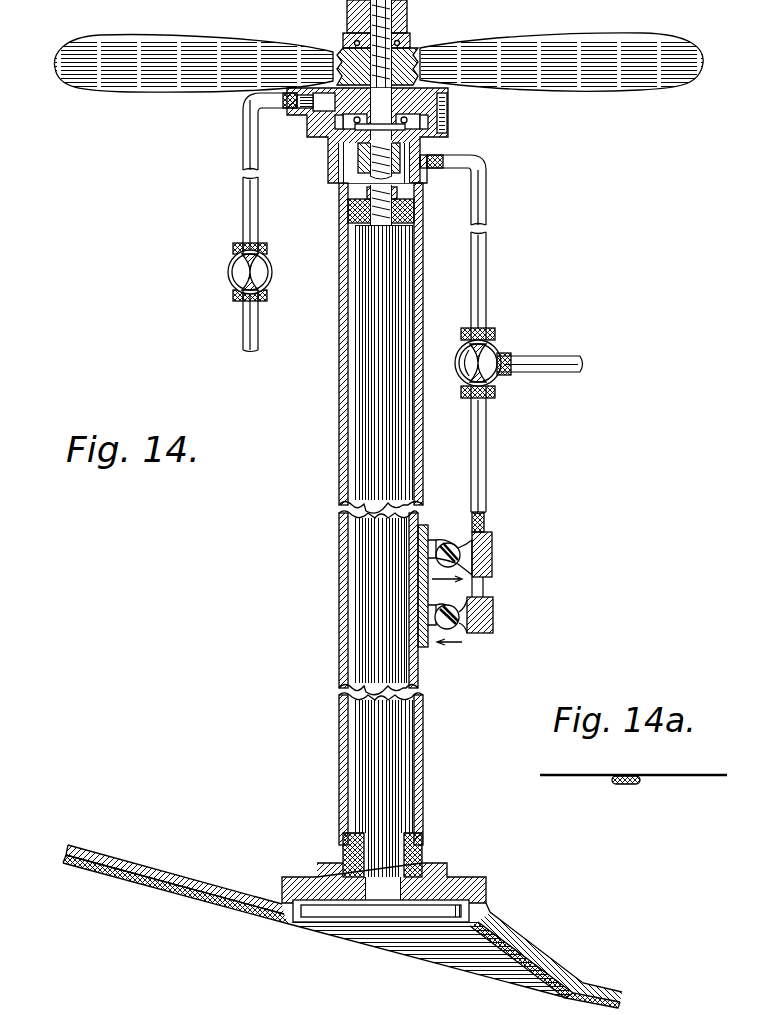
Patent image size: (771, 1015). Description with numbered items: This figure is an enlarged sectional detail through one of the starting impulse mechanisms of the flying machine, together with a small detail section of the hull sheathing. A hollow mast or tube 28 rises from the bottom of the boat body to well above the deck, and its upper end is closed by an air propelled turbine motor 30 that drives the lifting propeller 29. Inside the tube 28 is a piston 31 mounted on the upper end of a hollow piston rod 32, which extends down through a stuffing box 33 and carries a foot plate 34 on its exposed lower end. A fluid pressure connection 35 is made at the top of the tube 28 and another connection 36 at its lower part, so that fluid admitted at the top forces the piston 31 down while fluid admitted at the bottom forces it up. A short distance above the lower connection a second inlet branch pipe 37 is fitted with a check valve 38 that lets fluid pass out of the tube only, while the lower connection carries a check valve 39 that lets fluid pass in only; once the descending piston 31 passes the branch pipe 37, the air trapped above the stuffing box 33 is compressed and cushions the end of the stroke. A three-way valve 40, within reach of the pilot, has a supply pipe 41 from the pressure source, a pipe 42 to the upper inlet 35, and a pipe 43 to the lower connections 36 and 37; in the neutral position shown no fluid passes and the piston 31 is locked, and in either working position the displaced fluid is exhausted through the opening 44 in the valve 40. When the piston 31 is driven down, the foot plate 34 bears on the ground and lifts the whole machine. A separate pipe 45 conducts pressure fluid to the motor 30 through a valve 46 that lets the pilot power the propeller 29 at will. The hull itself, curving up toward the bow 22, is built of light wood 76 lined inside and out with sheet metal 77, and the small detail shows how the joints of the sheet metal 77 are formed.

In FIG. 14, the bow 22 is at (76, 873).
In FIG. 14, the hollow mast or tube 28 is at (343, 406).
In FIG. 14, the propeller 29 is at (632, 86).
In FIG. 14, the air propelled turbine motor 30 is at (438, 103).
In FIG. 14, the piston 31 is at (348, 230).
In FIG. 14, the hollow piston rod 32 is at (382, 598).
In FIG. 14, the stuffing box 33 is at (345, 850).
In FIG. 14, the foot plate 34 is at (336, 906).
In FIG. 14, the upper fluid pressure pipe connection 35 is at (445, 172).
In FIG. 14, the lower pipe connection 36 is at (433, 625).
In FIG. 14, the second inlet branch pipe 37 is at (433, 545).
In FIG. 14, the check valve 38 is at (452, 543).
In FIG. 14, the check valve 39 is at (459, 627).
In FIG. 14, the three-way valve 40 is at (499, 340).
In FIG. 14, the supply pipe 41 is at (552, 360).
In FIG. 14, the pipe 42 is at (497, 263).
In FIG. 14, the pipe 43 is at (484, 452).
In FIG. 14, the exhaust opening 44 is at (457, 362).
In FIG. 14, the pipe 45 is at (243, 135).
In FIG. 14, the valve 46 is at (232, 264).
In FIG. 14, the light wood 76 is at (196, 894).
In FIG. 14, the sheet metal 77 is at (150, 876).
In FIG. 14A, the sheet metal 77 is at (667, 777).